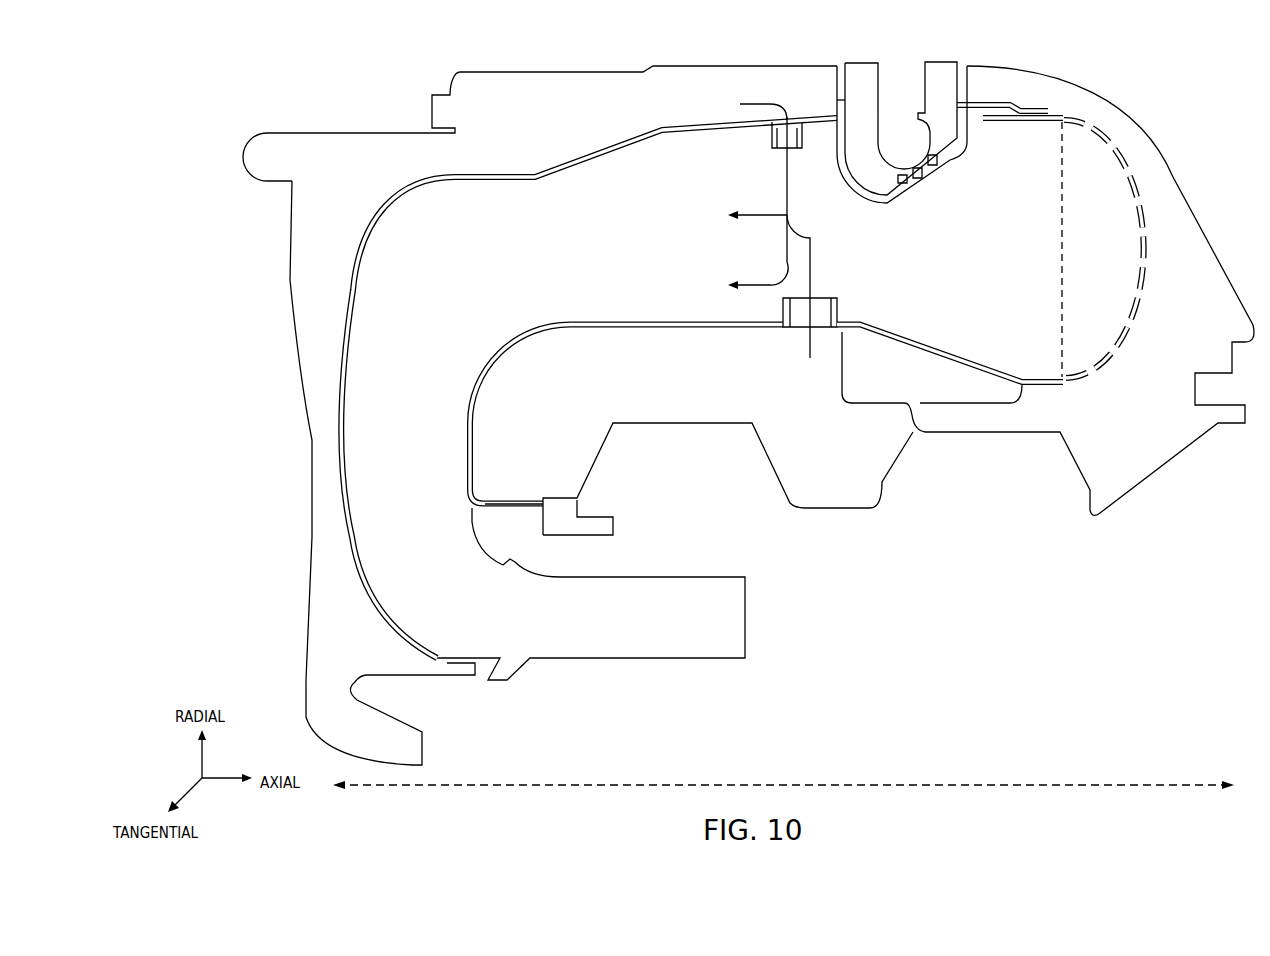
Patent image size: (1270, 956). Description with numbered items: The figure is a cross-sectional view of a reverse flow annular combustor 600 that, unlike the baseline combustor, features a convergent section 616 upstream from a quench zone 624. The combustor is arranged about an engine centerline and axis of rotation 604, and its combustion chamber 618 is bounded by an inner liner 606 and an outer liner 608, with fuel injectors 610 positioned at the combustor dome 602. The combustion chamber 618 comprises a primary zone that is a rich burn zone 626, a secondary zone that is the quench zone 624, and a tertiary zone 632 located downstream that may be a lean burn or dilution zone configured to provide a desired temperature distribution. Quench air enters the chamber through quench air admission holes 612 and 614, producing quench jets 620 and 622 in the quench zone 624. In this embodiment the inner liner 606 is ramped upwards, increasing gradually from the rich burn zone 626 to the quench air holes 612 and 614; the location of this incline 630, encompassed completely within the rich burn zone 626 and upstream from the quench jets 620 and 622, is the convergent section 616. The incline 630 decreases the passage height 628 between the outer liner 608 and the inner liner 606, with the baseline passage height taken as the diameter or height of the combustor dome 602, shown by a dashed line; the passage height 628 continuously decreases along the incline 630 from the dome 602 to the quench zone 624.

The reverse flow annular combustor 600 is at (283, 97).
The combustor dome 602 is at (1125, 180).
The engine centerline and axis of rotation 604 is at (965, 783).
The inner liner 606 is at (596, 328).
The outer liner 608 is at (612, 148).
The fuel injector 610 is at (905, 72).
The quench air admission hole 612 is at (800, 320).
The quench air admission hole 614 is at (772, 136).
The convergent section 616 is at (913, 433).
The combustion chamber 618 is at (499, 291).
The quench jet 620 is at (811, 253).
The quench jet 622 is at (787, 176).
The quench zone 624 is at (762, 261).
The rich burn zone 626 is at (996, 262).
The passage height 628 is at (1062, 207).
The incline 630 is at (925, 345).
The tertiary zone 632 is at (611, 274).